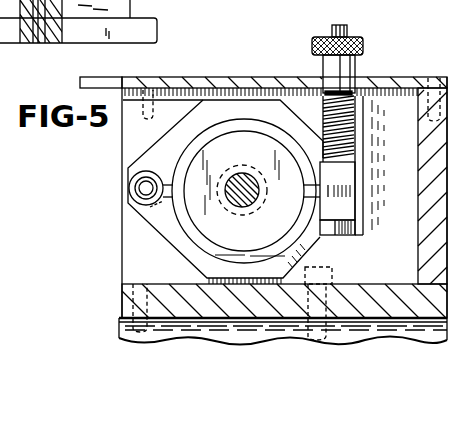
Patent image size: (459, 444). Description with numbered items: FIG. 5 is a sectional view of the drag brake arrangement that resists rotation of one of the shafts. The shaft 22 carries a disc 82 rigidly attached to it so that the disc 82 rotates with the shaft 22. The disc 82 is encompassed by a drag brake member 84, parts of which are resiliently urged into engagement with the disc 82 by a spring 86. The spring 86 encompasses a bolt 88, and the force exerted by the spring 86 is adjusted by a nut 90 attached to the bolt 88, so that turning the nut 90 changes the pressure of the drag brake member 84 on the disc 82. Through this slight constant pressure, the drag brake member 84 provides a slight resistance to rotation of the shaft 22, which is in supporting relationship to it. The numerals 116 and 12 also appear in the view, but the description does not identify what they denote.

The shaft 22 is at (247, 188).
The ring 82 is at (247, 248).
The bracket 84 is at (174, 133).
The spring 86 is at (348, 121).
The detent plunger 88 is at (348, 228).
The knob 90 is at (312, 42).
The housing 116 is at (458, 3).
The base 12 is at (437, 225).